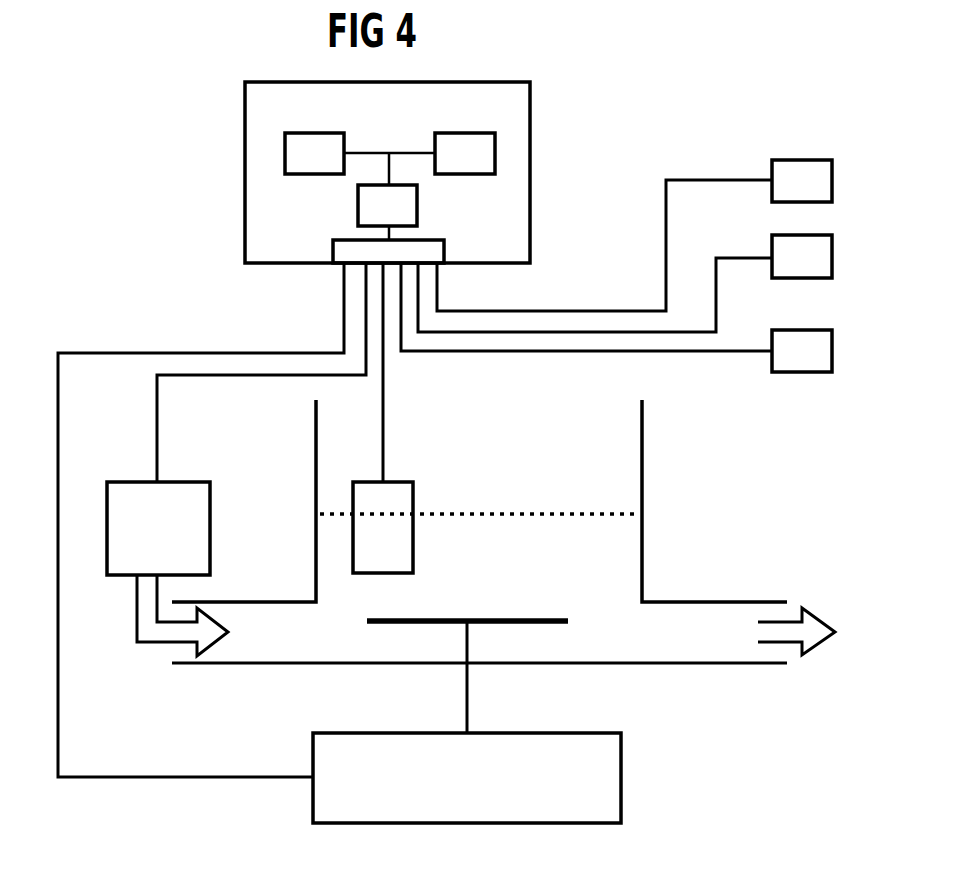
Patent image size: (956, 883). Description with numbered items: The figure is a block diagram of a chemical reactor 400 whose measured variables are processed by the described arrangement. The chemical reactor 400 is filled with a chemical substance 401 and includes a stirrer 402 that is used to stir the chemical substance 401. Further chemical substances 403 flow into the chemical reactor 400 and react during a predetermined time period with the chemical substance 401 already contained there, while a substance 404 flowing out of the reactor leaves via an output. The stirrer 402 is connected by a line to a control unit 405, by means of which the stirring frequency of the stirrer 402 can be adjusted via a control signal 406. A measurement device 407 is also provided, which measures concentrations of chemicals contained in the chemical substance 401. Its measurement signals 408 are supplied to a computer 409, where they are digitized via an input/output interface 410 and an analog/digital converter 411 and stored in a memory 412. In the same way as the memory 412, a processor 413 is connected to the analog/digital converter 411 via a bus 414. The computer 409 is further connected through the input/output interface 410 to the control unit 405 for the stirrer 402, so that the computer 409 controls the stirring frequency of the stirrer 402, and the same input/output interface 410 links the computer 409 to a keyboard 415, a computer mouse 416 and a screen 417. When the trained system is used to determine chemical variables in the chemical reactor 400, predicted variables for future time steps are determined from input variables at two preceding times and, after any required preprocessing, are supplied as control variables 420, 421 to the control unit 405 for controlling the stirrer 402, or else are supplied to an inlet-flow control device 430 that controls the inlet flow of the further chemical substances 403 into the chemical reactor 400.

The chemical reactor 400 is at (562, 430).
The chemical substance 401 is at (642, 540).
The stirrer 402 is at (467, 643).
The further chemical substances 403 is at (145, 645).
The substance flowing out 404 is at (815, 650).
The control unit 405 is at (621, 778).
The control signal 406 is at (467, 698).
The measurement device 407 is at (413, 488).
The measurement signals 408 is at (383, 415).
The computer 409 is at (245, 95).
The input/output interface 410 is at (340, 265).
The analog/digital converter 411 is at (417, 208).
The memory 412 is at (495, 150).
The processor 413 is at (285, 158).
The bus 414 is at (389, 153).
The keyboard 415 is at (802, 372).
The computer mouse 416 is at (797, 278).
The screen 417 is at (802, 160).
The control variable 420 is at (58, 418).
The control variable 421 is at (157, 443).
The inlet-flow control device 430 is at (210, 530).